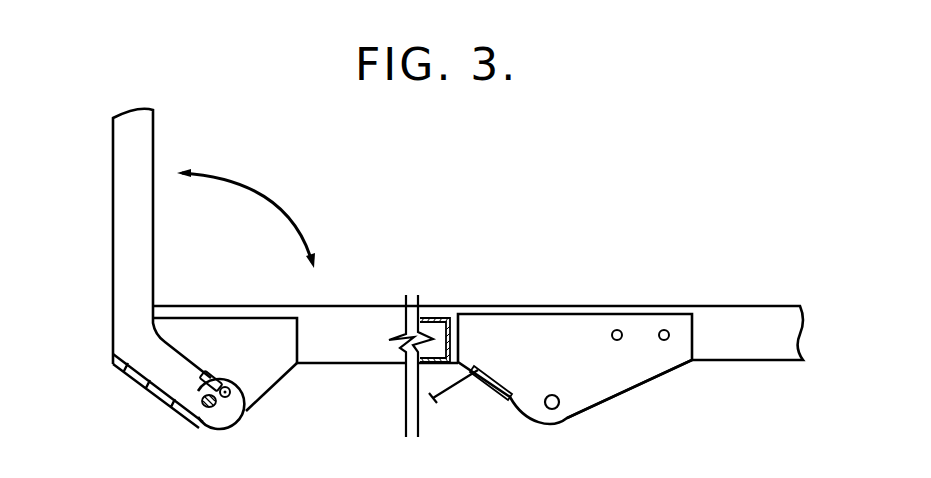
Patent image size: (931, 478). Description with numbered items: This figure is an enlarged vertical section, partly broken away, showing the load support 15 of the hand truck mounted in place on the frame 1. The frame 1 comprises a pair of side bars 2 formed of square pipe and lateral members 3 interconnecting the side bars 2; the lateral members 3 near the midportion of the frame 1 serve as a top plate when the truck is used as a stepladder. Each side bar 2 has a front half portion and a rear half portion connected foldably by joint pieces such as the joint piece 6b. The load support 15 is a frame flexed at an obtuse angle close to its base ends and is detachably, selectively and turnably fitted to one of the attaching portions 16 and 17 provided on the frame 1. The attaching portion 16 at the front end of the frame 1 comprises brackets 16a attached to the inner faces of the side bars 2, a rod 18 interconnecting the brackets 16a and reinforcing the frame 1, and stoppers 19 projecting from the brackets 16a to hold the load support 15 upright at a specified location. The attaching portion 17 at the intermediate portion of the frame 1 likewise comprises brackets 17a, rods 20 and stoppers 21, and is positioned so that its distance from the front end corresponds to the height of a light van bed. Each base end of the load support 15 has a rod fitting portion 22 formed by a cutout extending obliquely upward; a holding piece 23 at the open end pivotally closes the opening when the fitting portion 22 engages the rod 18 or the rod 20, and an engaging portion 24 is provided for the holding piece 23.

The frame 1 is at (781, 298).
The side bar 2 is at (739, 311).
The lateral member 3 is at (441, 318).
The joint piece 6b is at (437, 393).
The load support 15 is at (112, 205).
The attaching portion 16 is at (287, 310).
The bracket 16a is at (268, 389).
The attaching portion 17 is at (649, 314).
The bracket 17a is at (631, 378).
The rod 18 is at (201, 418).
The stopper 19 is at (133, 381).
The rod 20 is at (557, 409).
The stopper 21 is at (513, 399).
The rod fitting portion 22 is at (226, 387).
The holding piece 23 is at (198, 391).
The engaging portion 24 is at (207, 375).